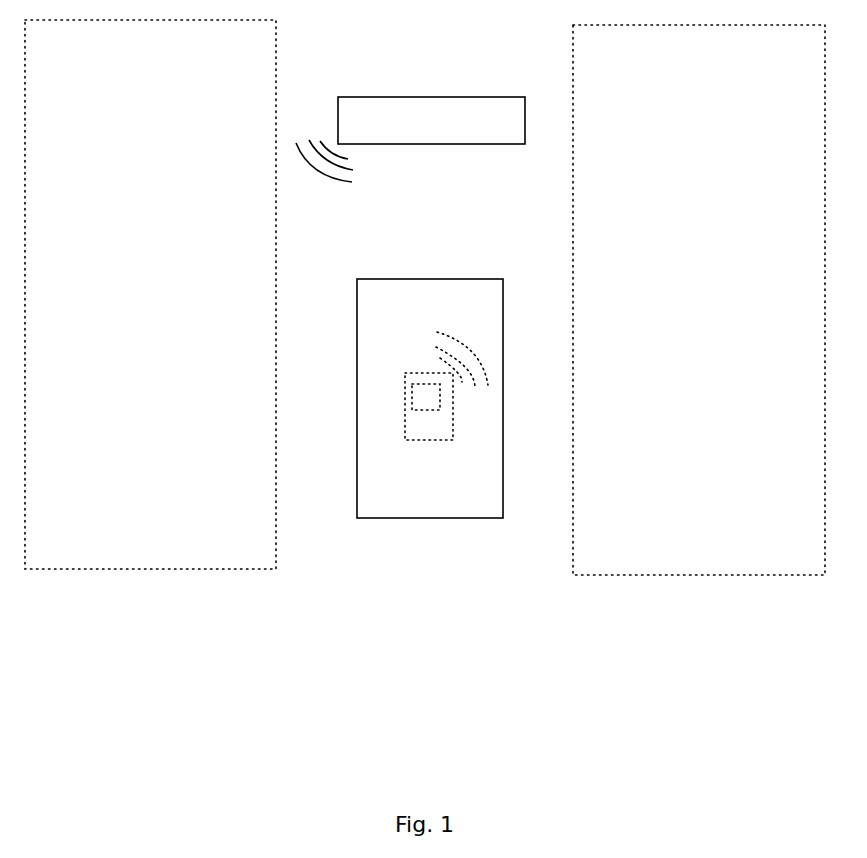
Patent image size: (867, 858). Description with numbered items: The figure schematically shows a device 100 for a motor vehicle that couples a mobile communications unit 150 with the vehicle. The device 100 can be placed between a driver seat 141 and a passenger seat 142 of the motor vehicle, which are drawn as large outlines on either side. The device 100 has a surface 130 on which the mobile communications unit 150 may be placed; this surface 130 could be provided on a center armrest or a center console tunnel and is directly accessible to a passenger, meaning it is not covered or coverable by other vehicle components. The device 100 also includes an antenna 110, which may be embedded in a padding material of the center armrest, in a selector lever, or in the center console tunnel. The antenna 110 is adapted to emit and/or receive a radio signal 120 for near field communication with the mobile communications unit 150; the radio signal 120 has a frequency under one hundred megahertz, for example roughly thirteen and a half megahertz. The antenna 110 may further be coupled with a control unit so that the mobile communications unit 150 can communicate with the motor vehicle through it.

The device 100 is at (517, 644).
The antenna 110 is at (452, 153).
The radio signal 120 is at (355, 192).
The surface 130 is at (510, 405).
The driver seat 141 is at (693, 582).
The passenger seat 142 is at (145, 575).
The mobile communications unit 150 is at (420, 447).